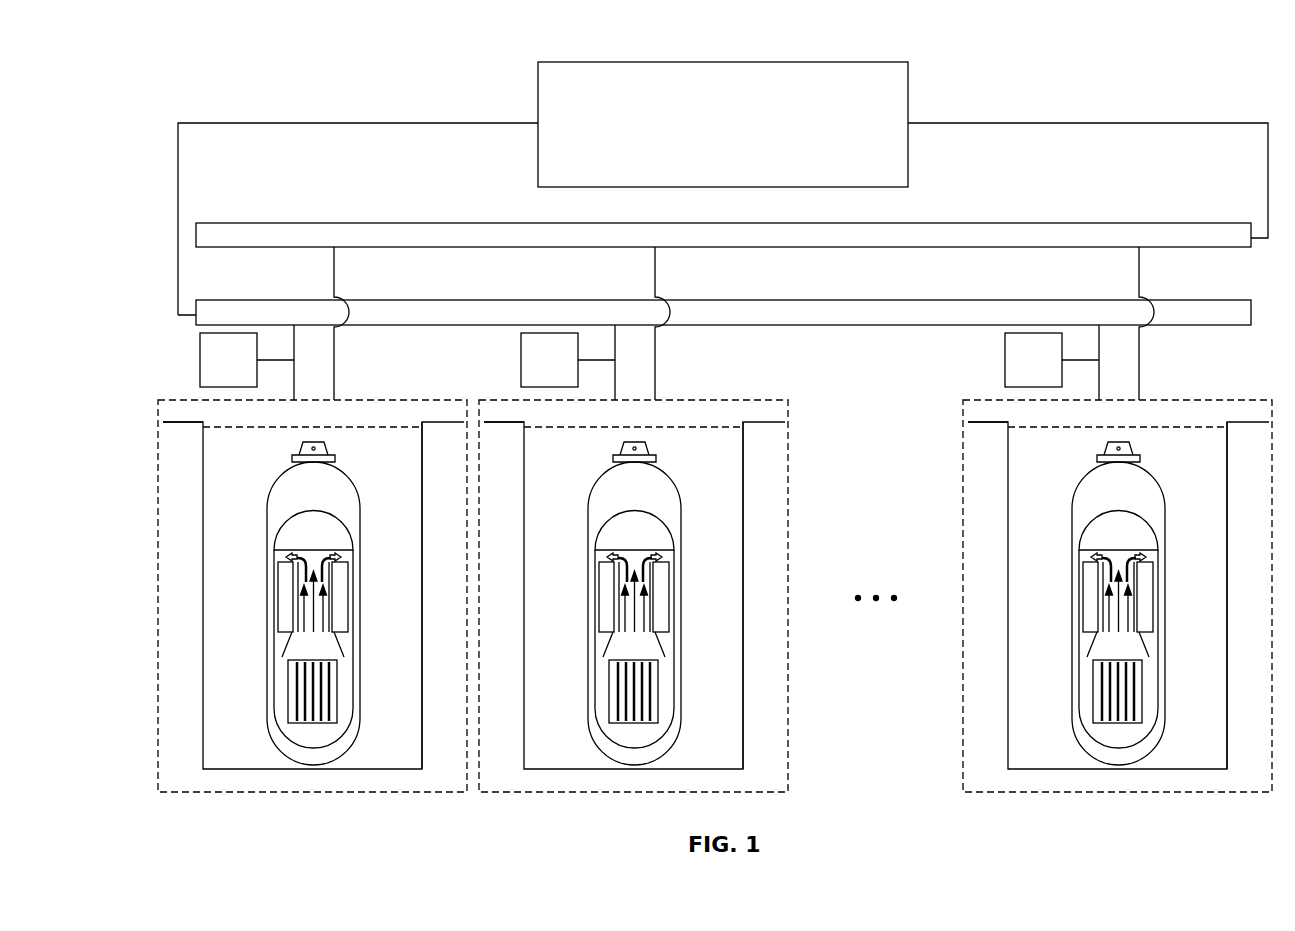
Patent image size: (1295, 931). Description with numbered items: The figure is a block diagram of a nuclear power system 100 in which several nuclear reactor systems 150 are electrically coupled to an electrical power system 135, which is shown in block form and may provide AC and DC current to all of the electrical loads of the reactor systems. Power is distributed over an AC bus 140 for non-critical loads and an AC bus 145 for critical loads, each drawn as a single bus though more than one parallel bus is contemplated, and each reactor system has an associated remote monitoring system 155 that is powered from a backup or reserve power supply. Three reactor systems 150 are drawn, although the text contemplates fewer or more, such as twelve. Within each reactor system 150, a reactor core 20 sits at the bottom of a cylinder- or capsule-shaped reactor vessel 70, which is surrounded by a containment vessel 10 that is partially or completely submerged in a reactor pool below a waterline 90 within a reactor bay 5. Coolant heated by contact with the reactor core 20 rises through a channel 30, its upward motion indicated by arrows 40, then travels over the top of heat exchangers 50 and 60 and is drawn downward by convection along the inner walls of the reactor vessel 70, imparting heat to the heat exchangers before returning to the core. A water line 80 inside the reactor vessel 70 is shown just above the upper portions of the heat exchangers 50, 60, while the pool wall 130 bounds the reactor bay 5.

The nuclear power system 100 is at (283, 103).
The electrical power system 135 is at (706, 135).
The AC bus 140 is at (690, 224).
The AC bus 145 is at (690, 301).
The remote monitoring system 155 is at (200, 362).
The nuclear reactor system 150 is at (193, 400).
The waterline 90 is at (350, 418).
The pool wall 130 is at (189, 433).
The reactor bay 5 is at (414, 578).
The containment vessel 10 is at (303, 765).
The reactor vessel 70 is at (352, 703).
The water line 80 is at (303, 538).
The heat exchanger 50 is at (283, 592).
The heat exchanger 60 is at (342, 580).
The arrows 40 is at (317, 602).
The channel 30 is at (298, 656).
The reactor core 20 is at (288, 697).